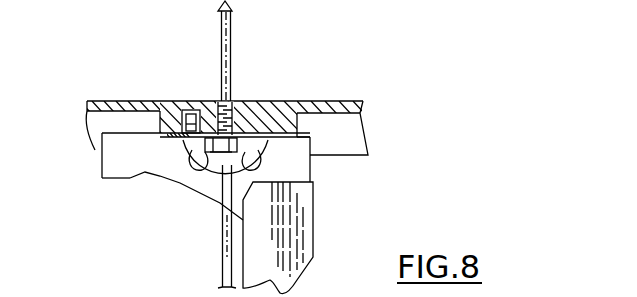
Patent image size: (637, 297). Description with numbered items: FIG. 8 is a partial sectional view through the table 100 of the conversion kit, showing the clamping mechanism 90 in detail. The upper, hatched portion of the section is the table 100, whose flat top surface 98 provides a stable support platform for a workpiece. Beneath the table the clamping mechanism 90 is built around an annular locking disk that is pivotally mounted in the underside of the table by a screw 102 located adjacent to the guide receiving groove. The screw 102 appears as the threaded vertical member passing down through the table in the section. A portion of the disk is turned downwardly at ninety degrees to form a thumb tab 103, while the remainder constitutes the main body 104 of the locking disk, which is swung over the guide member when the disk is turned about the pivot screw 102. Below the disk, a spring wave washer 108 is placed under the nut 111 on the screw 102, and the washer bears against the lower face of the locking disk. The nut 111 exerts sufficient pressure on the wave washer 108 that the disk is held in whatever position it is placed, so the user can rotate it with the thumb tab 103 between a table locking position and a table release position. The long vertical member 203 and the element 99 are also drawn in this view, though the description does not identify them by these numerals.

The clamping mechanism 90 is at (163, 156).
The flat top surface 98 is at (352, 103).
The retaining clip 99 is at (192, 108).
The table 100 is at (222, 94).
The screw 102 is at (232, 112).
The thumb tab 103 is at (218, 162).
The main body of the locking disk 104 is at (250, 113).
The spring wave washer 108 is at (244, 151).
The nut 111 is at (246, 140).
The shaft 203 is at (229, 34).